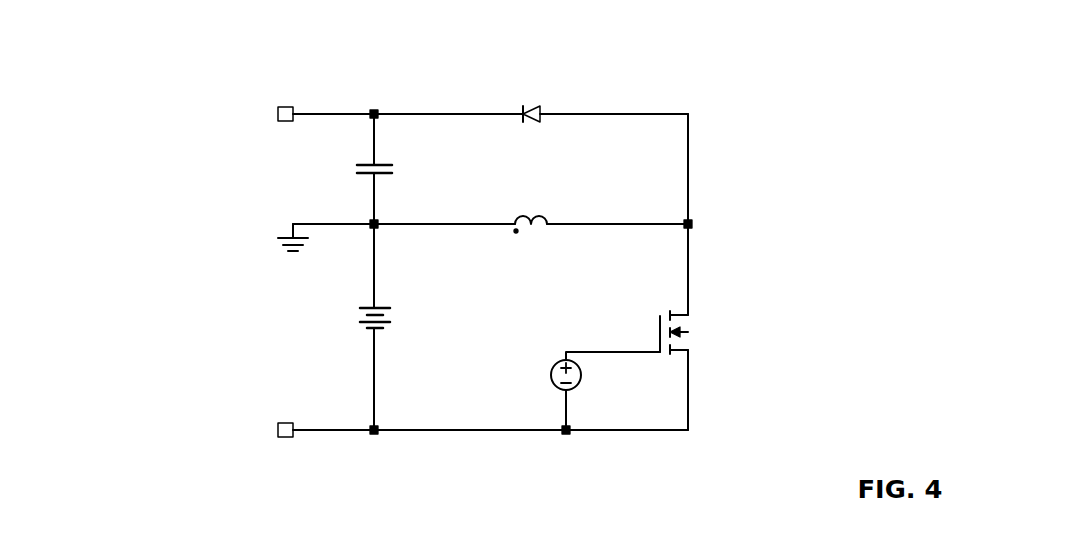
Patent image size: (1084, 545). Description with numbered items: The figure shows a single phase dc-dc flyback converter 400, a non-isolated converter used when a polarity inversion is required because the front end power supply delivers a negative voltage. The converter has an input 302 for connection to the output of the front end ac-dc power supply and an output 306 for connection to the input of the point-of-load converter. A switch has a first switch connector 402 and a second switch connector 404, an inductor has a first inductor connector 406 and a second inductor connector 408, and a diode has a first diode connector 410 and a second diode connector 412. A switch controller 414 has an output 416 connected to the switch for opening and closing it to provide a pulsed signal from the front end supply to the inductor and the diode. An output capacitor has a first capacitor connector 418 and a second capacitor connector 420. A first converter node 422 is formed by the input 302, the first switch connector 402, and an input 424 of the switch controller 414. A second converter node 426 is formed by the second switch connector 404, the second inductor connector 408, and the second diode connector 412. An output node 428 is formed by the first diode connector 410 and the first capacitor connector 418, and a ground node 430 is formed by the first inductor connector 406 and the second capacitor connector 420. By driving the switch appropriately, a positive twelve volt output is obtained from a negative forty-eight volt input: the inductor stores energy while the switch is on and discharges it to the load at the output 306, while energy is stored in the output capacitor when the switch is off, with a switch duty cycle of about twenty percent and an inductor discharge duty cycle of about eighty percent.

The flyback converter 400 is at (150, 70).
The output 306 is at (282, 106).
The input 302 is at (287, 440).
The output node 428 is at (370, 102).
The first connector of diode D4 410 is at (470, 113).
The second connector of diode D4 412 is at (656, 113).
The first connector of output capacitor C4 418 is at (368, 143).
The second connector of output capacitor C4 420 is at (372, 192).
The first connector of inductor L4 406 is at (470, 223).
The second connector of inductor L4 408 is at (652, 223).
The second converter node 426 is at (705, 221).
The ground node 430 is at (342, 262).
The second connector of switch Q4 404 is at (688, 290).
The first connector of switch Q4 402 is at (688, 395).
The output of switch controller 416 is at (632, 349).
The switch controller 414 is at (555, 362).
The input of switch controller 424 is at (563, 410).
The first converter node 422 is at (576, 444).